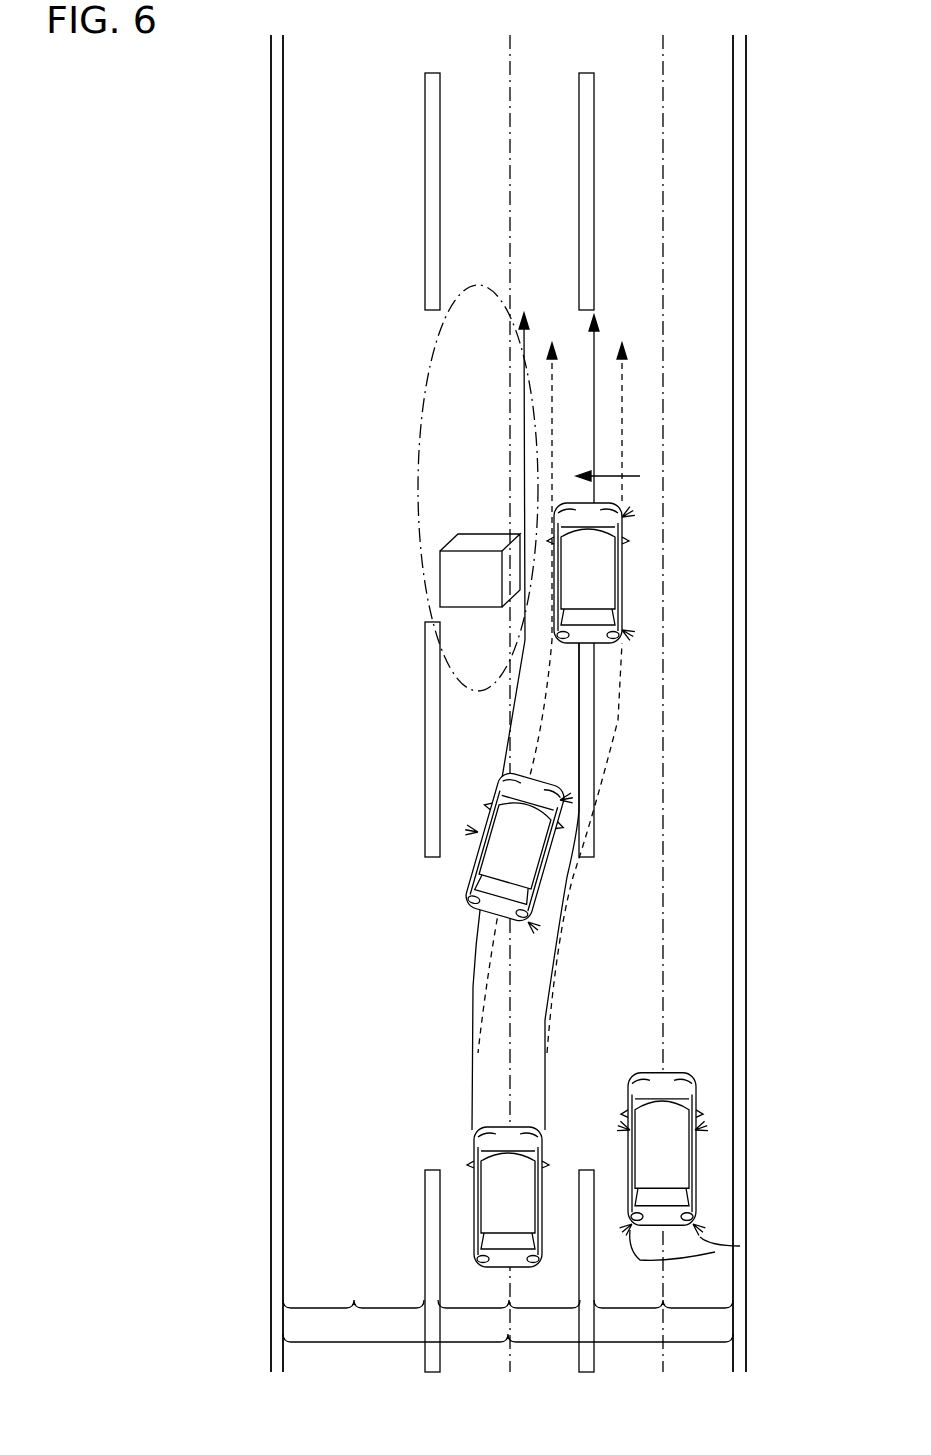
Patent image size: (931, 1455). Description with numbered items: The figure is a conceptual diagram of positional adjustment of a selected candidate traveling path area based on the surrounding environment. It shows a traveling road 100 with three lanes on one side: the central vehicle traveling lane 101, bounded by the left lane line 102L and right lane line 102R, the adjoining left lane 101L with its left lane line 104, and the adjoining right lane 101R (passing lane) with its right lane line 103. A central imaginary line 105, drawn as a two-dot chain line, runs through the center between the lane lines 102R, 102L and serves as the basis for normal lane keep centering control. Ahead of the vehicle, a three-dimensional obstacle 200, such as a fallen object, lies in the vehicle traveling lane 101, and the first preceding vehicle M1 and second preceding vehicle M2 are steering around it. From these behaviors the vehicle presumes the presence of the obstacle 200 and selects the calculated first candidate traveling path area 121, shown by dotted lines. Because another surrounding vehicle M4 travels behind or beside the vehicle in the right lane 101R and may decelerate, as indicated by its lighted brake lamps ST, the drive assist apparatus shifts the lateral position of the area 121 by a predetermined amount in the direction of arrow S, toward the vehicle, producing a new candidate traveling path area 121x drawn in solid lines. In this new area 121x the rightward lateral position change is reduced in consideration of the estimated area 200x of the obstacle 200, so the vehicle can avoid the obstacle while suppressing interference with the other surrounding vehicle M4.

The traveling road 100 is at (508, 1355).
The vehicle traveling lane 101 is at (509, 1321).
The left lane 101L is at (353, 1321).
The right lane 101R is at (663, 1321).
The left lane line 102L is at (432, 1268).
The right lane line 102R is at (583, 1280).
The right lane line of the right lane 103 is at (740, 1202).
The left lane line of the left lane 104 is at (278, 1203).
The central imaginary line 105 is at (500, 426).
The first candidate traveling path area 121 is at (605, 794).
The new candidate traveling path area 121x is at (572, 886).
The obstacle 200 is at (457, 575).
The estimated area of the obstacle 200x is at (420, 503).
The first preceding vehicle M1 is at (485, 870).
The second preceding vehicle M2 is at (597, 645).
The other surrounding vehicle M4 is at (670, 1162).
The arrow S is at (612, 476).
The brake lamps ST is at (715, 1252).